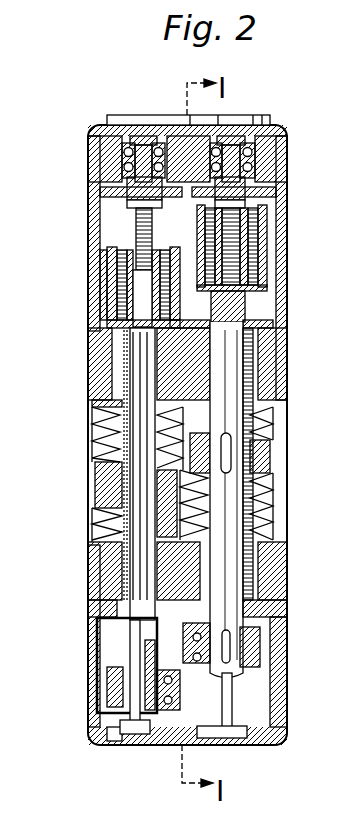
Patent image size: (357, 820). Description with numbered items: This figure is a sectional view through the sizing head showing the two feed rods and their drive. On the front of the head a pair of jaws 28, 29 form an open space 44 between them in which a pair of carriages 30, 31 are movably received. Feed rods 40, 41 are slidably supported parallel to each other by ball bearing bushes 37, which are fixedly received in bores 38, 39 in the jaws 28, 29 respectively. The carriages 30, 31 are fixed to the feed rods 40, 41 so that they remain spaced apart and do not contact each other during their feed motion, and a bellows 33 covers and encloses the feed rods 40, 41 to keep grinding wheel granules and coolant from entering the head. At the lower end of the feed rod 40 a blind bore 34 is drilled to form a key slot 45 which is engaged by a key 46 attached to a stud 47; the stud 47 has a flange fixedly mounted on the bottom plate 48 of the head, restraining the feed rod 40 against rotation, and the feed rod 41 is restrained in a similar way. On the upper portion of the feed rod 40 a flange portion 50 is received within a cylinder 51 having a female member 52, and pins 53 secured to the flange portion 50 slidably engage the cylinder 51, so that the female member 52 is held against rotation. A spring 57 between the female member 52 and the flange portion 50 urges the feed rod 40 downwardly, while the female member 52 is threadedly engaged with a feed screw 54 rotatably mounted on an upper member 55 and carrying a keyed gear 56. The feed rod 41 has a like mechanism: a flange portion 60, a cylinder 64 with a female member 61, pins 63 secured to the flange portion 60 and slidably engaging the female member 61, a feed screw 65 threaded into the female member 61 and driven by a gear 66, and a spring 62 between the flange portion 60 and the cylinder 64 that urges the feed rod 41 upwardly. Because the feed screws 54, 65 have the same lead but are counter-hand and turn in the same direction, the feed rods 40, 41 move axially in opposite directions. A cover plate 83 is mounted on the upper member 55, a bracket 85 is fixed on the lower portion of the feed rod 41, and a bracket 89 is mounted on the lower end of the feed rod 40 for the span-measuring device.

The jaw 28 is at (275, 378).
The jaw 29 is at (283, 598).
The carriage 30 is at (125, 475).
The carriage 31 is at (275, 467).
The bellows 33 is at (275, 521).
The blind bore 34 is at (185, 642).
The ball bearing bush 37 is at (105, 357).
The bore 38 is at (103, 385).
The bore 39 is at (92, 583).
The feed rod 40 is at (115, 441).
The feed rod 41 is at (273, 440).
The open space 44 is at (277, 488).
The key slot 45 is at (112, 673).
The key 46 is at (97, 617).
The stud 47 is at (137, 735).
The bottom plate 48 is at (272, 739).
The flange portion 50 is at (117, 301).
The cylinder 51 is at (115, 286).
The female member 52 is at (102, 224).
The pin 53 is at (112, 334).
The feed screw 54 is at (104, 192).
The upper member 55 is at (287, 152).
The gear 56 is at (108, 184).
The spring 57 is at (118, 267).
The flange portion 60 is at (284, 256).
The female member 61 is at (287, 228).
The spring 62 is at (280, 282).
The pin 63 is at (268, 216).
The cylinder 64 is at (277, 308).
The feed screw 65 is at (280, 336).
The gear 66 is at (270, 190).
The cover plate 83 is at (284, 129).
The bracket 85 is at (282, 658).
The bracket 89 is at (188, 690).